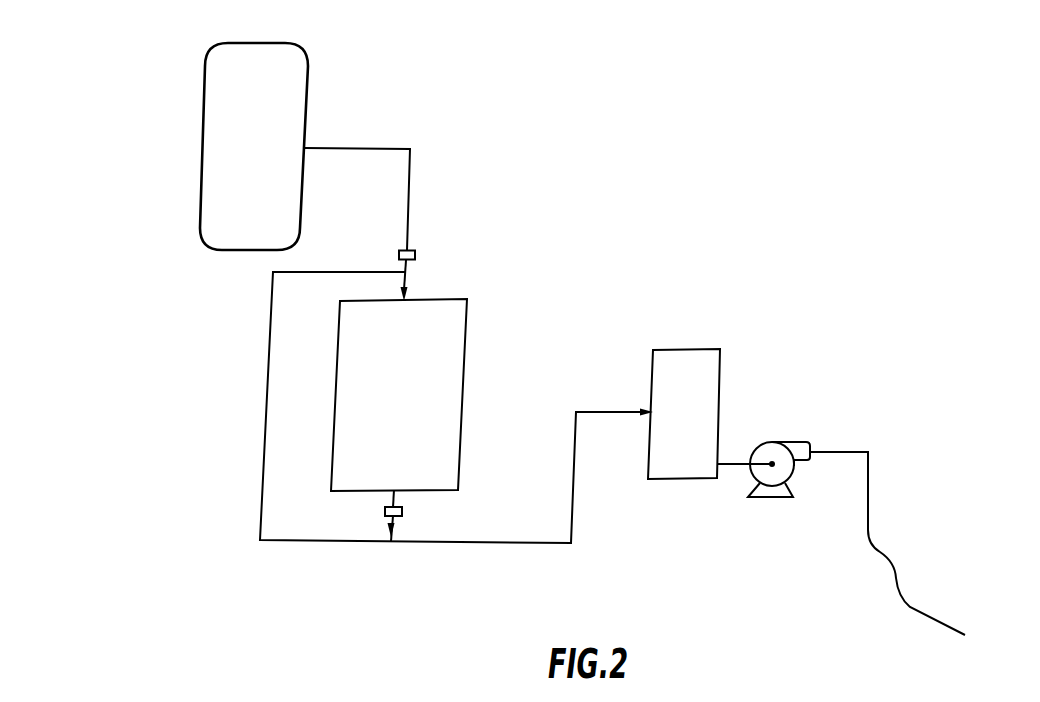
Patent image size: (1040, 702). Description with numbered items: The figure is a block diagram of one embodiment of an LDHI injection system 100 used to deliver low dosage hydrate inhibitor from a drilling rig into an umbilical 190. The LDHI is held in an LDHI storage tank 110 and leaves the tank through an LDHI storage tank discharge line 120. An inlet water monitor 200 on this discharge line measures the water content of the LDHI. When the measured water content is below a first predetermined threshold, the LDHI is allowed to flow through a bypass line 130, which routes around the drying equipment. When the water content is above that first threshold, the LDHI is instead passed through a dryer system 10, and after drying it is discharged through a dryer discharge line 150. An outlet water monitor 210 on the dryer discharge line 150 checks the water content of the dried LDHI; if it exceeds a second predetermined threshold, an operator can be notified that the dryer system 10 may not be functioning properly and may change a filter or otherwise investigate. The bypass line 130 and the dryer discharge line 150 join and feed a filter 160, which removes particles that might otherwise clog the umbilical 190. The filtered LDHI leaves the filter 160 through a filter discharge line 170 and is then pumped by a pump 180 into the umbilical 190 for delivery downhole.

The LDHI injection system 100 is at (694, 195).
The LDHI storage tank 110 is at (271, 162).
The LDHI storage tank discharge line 120 is at (410, 197).
The bypass line 130 is at (267, 378).
The dryer system 10 is at (413, 410).
The dryer discharge line 150 is at (400, 522).
The filter 160 is at (701, 427).
The filter discharge line 170 is at (833, 452).
The pump 180 is at (772, 497).
The umbilical 190 is at (910, 607).
The inlet water monitor 200 is at (415, 255).
The outlet water monitor 210 is at (385, 511).